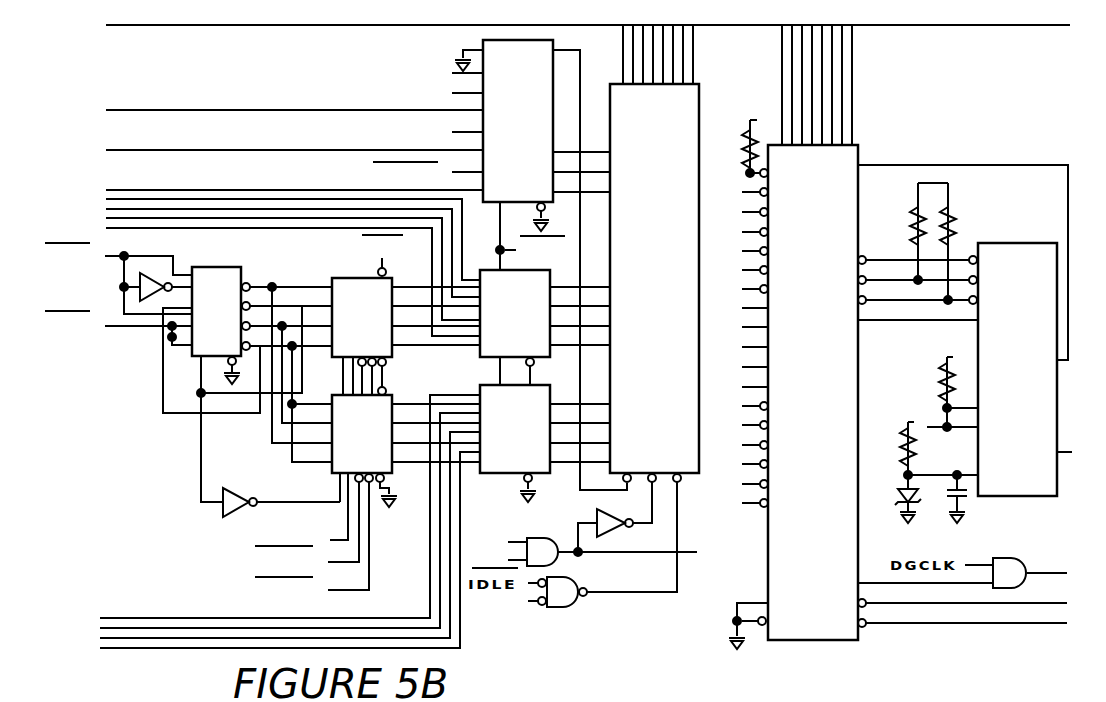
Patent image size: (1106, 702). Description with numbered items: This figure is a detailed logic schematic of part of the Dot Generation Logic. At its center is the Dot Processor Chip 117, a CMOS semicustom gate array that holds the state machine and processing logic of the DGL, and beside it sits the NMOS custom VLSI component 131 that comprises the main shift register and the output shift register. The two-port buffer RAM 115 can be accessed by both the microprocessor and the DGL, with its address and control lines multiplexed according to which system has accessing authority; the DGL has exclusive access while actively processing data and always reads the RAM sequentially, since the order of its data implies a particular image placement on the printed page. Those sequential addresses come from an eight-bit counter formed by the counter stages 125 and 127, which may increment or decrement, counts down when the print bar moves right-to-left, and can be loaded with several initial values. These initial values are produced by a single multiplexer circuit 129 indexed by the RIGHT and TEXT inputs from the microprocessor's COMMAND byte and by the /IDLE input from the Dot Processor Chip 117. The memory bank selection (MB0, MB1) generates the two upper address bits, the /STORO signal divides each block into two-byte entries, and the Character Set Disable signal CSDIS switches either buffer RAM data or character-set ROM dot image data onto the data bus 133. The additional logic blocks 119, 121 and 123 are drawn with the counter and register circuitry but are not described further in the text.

The buffer RAM 115 is at (643, 308).
The Dot Processor Chip 117 is at (898, 337).
The register 119 is at (545, 443).
The register 121 is at (545, 327).
The decoder 123 is at (500, 265).
The eight-bit counter 125 is at (364, 496).
The eight-bit counter 127 is at (406, 315).
The multiplexer circuit 129 is at (187, 352).
The NMOS custom VLSI component 131 is at (1020, 369).
The data bus 133 is at (944, 27).